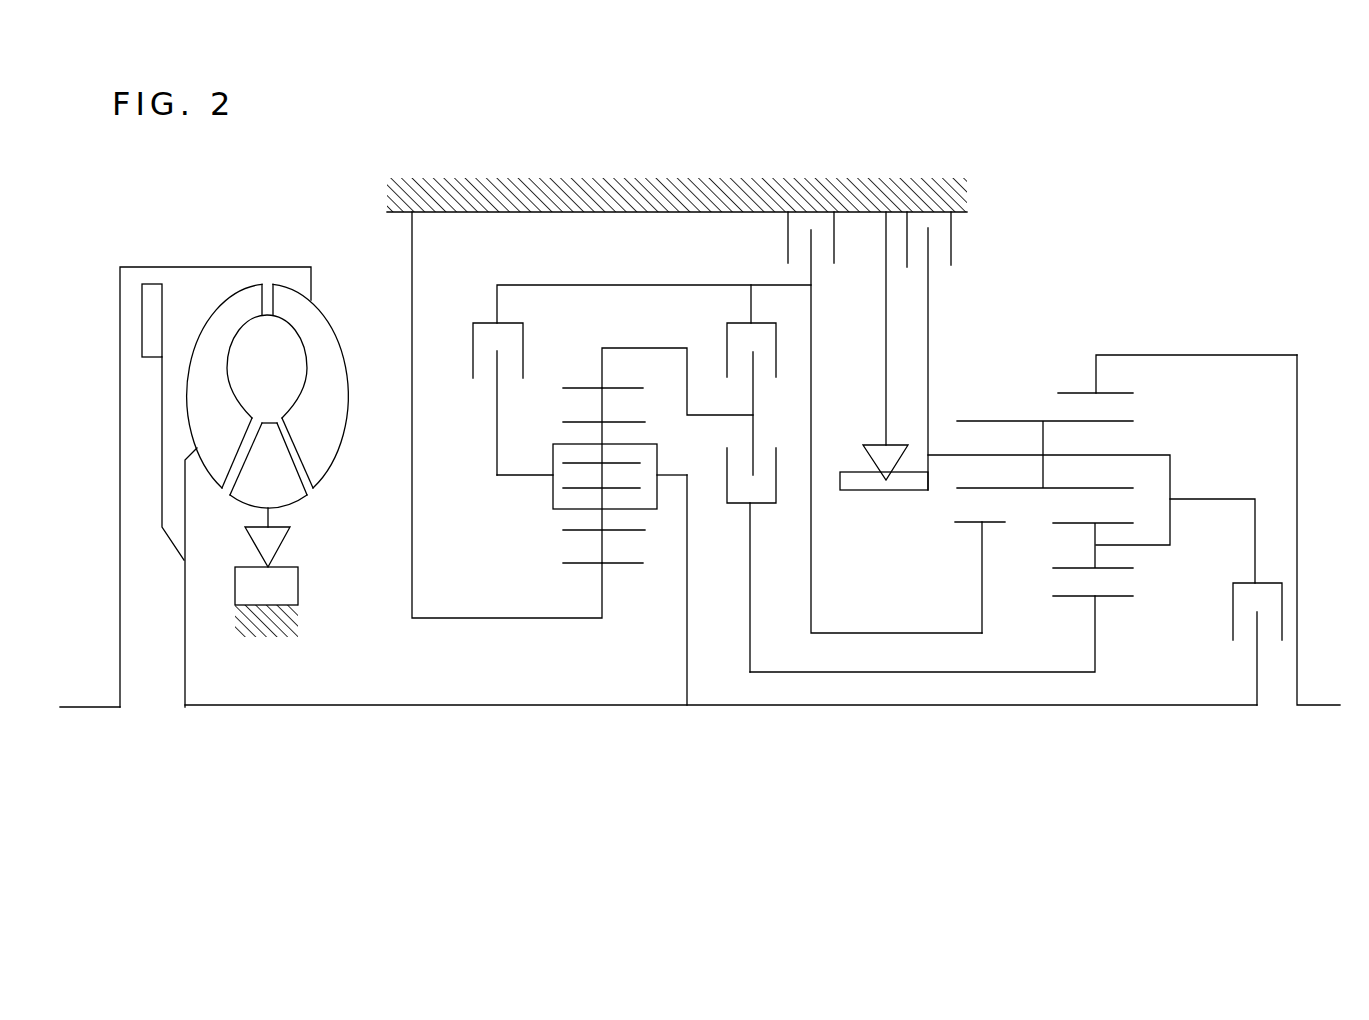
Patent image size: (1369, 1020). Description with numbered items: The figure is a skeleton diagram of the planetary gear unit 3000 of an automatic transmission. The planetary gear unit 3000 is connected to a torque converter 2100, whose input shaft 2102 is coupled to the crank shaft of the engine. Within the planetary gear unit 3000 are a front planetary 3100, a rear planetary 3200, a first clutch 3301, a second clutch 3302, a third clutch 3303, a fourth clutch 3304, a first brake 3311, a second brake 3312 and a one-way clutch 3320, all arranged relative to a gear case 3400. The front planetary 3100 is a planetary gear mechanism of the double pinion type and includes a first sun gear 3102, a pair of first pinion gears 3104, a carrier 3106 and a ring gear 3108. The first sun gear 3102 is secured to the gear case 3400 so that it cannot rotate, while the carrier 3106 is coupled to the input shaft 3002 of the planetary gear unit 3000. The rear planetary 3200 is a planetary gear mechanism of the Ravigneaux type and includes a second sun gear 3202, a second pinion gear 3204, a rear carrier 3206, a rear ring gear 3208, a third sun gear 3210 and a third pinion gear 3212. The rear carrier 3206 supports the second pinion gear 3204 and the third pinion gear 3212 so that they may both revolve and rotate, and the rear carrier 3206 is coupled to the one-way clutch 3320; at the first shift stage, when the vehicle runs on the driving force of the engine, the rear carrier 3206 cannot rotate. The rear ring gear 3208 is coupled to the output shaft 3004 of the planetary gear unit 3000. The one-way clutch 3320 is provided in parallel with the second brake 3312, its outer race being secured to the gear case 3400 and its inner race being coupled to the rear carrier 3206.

The torque converter 2100 is at (239, 242).
The input shaft 2102 is at (90, 708).
The planetary gear unit 3000 is at (765, 155).
The input shaft 3002 is at (667, 707).
The output shaft 3004 is at (1317, 704).
The front planetary 3100 is at (505, 482).
The first sun gear 3102 is at (622, 563).
The first pinion gears 3104 is at (615, 422).
The carrier 3106 is at (552, 483).
The ring gear 3108 is at (591, 389).
The rear planetary 3200 is at (1103, 327).
The second sun gear 3202 is at (977, 522).
The second pinion gear 3204 is at (1012, 420).
The rear carrier 3206 is at (1160, 455).
The rear ring gear 3208 is at (1080, 392).
The third sun gear 3210 is at (1080, 595).
The third pinion gear 3212 is at (1122, 568).
The C1 clutch 3301 is at (765, 507).
The C2 clutch 3302 is at (1232, 620).
The C3 clutch 3303 is at (725, 342).
The C4 clutch 3304 is at (483, 323).
The B1 brake 3311 is at (787, 225).
The B2 brake 3312 is at (952, 232).
The one-way clutch 3320 is at (865, 492).
The gear case 3400 is at (600, 177).